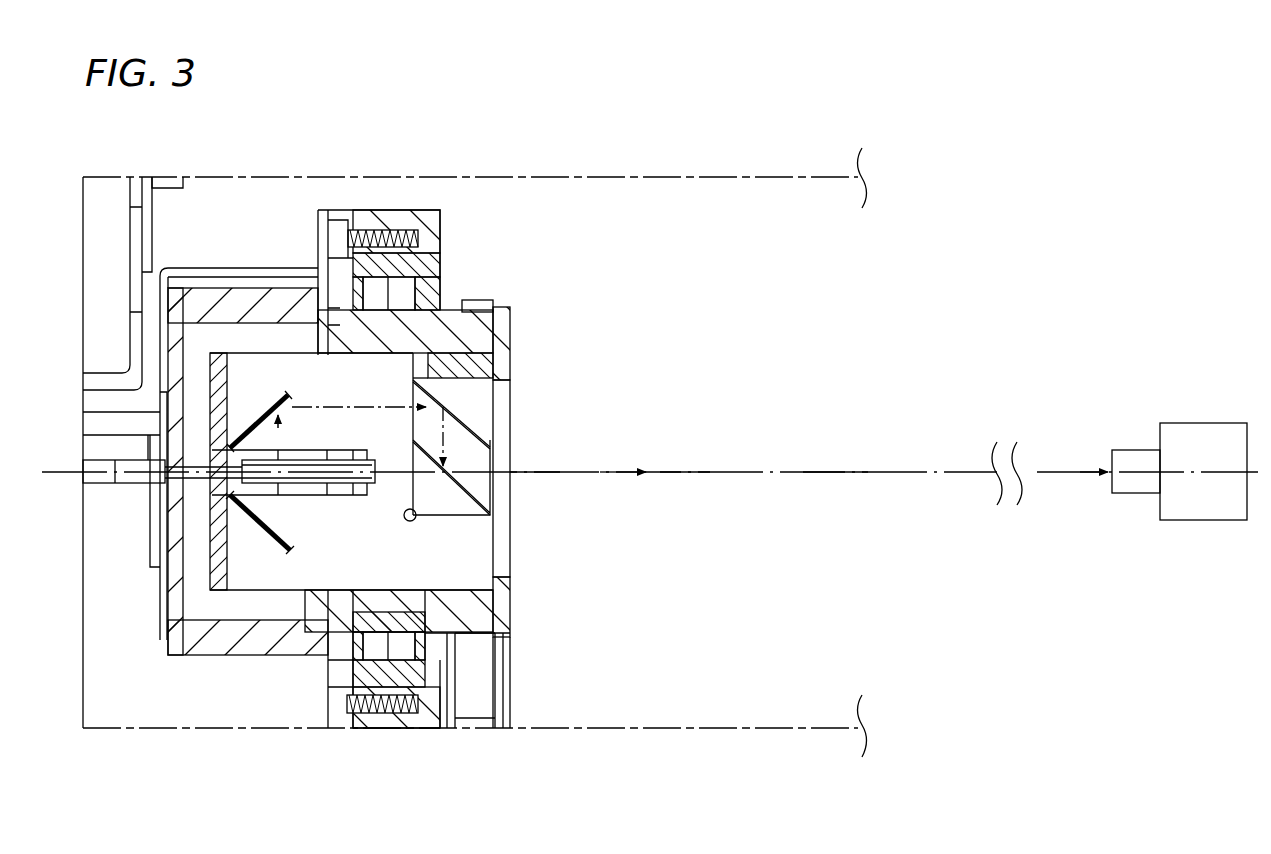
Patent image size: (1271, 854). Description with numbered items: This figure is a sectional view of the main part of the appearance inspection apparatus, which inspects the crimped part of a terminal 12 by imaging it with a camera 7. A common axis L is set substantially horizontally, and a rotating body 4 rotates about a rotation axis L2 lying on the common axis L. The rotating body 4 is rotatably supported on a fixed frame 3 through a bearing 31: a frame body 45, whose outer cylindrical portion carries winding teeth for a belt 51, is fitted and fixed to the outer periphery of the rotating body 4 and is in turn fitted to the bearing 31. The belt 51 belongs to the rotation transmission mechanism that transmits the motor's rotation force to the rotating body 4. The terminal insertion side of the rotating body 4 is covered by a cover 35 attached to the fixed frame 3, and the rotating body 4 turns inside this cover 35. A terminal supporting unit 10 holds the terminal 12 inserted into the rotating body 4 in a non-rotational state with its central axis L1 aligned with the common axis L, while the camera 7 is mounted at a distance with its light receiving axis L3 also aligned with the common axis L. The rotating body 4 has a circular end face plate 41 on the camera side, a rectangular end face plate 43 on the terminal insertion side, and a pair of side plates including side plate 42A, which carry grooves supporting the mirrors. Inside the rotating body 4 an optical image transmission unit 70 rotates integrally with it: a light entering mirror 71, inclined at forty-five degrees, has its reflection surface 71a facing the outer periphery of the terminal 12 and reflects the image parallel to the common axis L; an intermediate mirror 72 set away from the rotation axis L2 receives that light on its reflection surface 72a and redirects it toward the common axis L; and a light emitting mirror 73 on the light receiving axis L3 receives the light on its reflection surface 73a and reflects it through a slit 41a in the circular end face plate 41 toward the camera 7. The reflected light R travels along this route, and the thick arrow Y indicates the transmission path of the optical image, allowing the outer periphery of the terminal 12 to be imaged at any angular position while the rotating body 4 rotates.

The fixed frame 3 is at (433, 232).
The bearing 31 is at (425, 298).
The frame body 45 is at (480, 300).
The rotating body 4 is at (519, 340).
The circular end face plate 41 is at (513, 601).
The slit 41a is at (500, 547).
The optical image transmission unit 70 is at (475, 374).
The intermediate mirror 72 is at (427, 373).
The reflection surface of intermediate mirror 72a is at (462, 424).
The light emitting mirror 73 is at (437, 500).
The reflection surface of light emitting mirror 73a is at (465, 489).
The light entering mirror 71 is at (262, 422).
The reflection surface of light entering mirror 71a is at (286, 430).
The terminal 12 is at (305, 497).
The terminal supporting unit 10 is at (118, 496).
The rectangular end face plate 43 is at (213, 573).
The cover 35 is at (233, 657).
The side plate 42A is at (322, 565).
The belt 51 is at (487, 664).
The camera 7 is at (1205, 423).
The central axis of terminal L1 is at (350, 498).
The rotation axis L2 is at (548, 470).
The common axis L is at (697, 470).
The light receiving axis L3 is at (833, 470).
The reflected light R is at (322, 411).
The arrow indicating transmission path Y is at (605, 474).